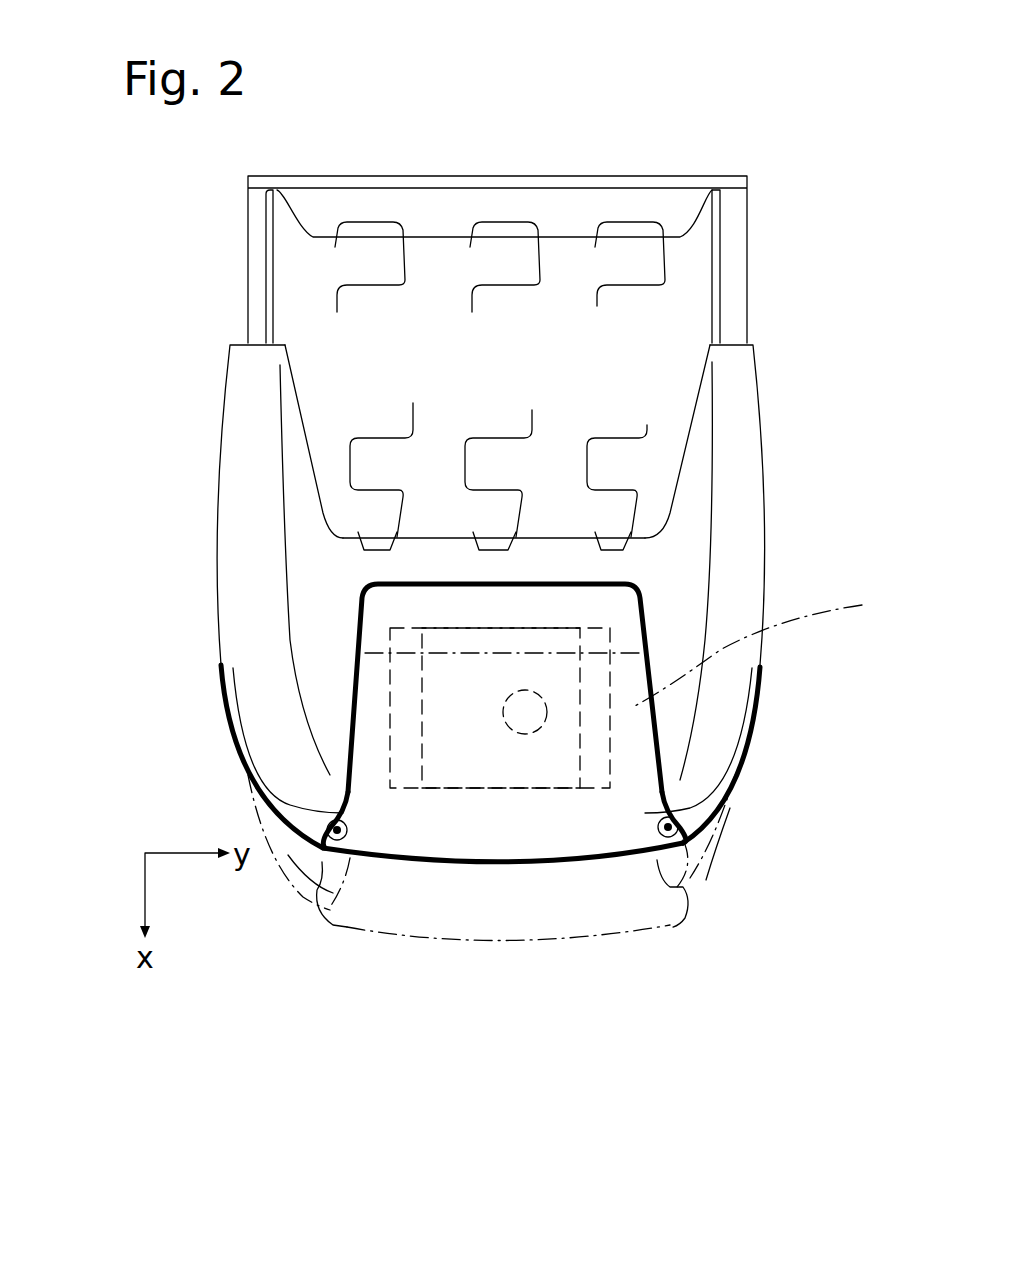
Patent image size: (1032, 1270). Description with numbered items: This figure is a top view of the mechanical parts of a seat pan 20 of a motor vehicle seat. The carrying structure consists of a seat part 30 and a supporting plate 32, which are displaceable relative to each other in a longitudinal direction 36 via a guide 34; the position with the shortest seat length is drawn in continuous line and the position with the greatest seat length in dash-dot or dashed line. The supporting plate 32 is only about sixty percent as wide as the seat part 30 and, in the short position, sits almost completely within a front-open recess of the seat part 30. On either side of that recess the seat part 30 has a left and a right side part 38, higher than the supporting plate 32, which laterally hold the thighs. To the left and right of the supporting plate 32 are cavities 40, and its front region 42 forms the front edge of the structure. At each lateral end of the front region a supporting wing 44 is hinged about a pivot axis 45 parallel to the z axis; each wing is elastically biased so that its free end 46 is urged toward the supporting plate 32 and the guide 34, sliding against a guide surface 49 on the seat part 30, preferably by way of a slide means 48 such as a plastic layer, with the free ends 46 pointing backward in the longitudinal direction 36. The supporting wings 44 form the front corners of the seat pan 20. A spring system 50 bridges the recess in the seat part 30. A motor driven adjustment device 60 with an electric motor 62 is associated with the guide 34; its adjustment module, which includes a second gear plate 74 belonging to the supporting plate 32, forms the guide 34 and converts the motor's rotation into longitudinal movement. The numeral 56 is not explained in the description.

The seat pan 20 is at (168, 376).
The seat part 30 is at (755, 502).
The supporting plate 32 is at (623, 677).
The guide 34 is at (523, 737).
The longitudinal direction 36 is at (511, 72).
The side part 38 is at (277, 708).
The cavity 40 is at (322, 860).
The front region 42 is at (603, 863).
The supporting wing 44 is at (693, 878).
The pivot axis 45 is at (673, 927).
The free end 46 is at (768, 662).
The slide means 48 is at (230, 660).
The guide surface 49 is at (257, 770).
The spring system 50 is at (655, 268).
The cross member 56 is at (487, 622).
The adjustment device 60 is at (380, 624).
The electric motor 62 is at (423, 720).
The second gear plate 74 is at (550, 640).